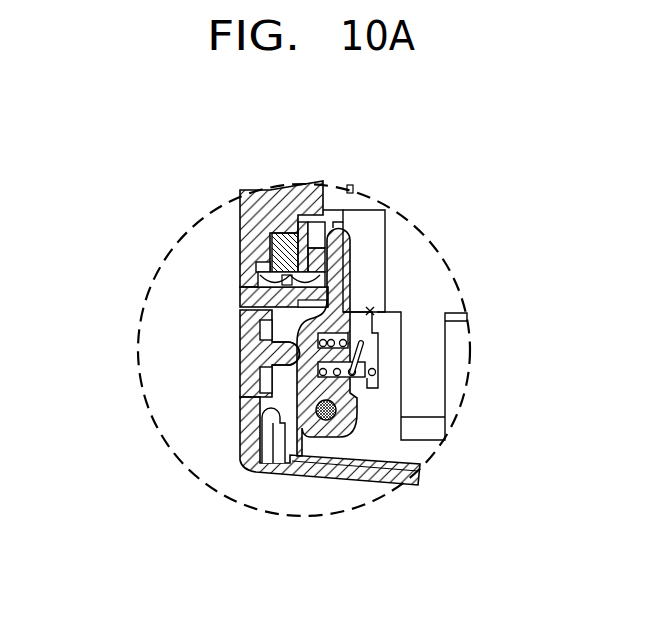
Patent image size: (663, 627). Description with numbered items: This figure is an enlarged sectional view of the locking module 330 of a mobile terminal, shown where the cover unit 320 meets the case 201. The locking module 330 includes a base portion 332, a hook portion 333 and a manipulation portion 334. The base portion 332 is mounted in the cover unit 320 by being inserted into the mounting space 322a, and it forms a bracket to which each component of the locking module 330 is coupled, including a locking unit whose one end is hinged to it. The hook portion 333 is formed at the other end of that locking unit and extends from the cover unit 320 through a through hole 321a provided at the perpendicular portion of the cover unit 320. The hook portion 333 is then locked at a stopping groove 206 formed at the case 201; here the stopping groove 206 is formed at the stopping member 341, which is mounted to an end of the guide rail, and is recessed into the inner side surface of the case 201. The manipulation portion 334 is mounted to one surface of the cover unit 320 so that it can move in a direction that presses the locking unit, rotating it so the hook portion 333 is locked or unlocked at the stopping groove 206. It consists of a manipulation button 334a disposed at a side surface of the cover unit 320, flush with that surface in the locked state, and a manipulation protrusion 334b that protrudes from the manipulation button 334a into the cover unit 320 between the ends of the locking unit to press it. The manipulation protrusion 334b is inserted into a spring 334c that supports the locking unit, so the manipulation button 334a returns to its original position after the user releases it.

The case 201 is at (240, 217).
The stopping groove 206 is at (312, 238).
The hook portion 333 is at (332, 238).
The through hole 321a is at (368, 311).
The stopping member 341 is at (240, 299).
The manipulation portion 334 is at (162, 359).
The manipulation button 334a is at (240, 343).
The manipulation protrusion 334b is at (240, 386).
The spring 334c is at (380, 359).
The locking module 330 is at (222, 412).
The cover unit 320 is at (240, 440).
The mounting space 322a is at (290, 452).
The base portion 332 is at (358, 427).